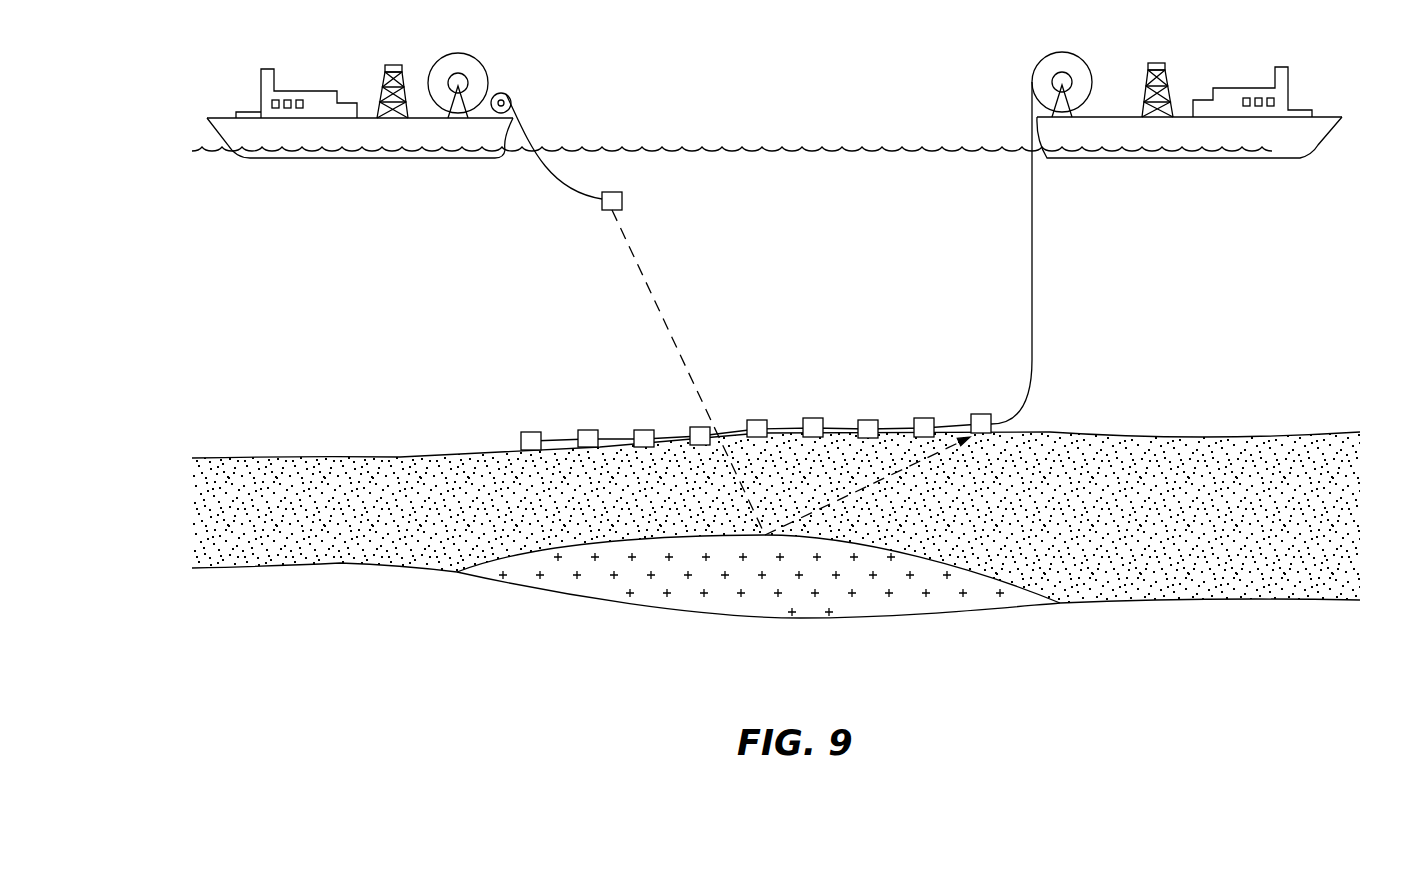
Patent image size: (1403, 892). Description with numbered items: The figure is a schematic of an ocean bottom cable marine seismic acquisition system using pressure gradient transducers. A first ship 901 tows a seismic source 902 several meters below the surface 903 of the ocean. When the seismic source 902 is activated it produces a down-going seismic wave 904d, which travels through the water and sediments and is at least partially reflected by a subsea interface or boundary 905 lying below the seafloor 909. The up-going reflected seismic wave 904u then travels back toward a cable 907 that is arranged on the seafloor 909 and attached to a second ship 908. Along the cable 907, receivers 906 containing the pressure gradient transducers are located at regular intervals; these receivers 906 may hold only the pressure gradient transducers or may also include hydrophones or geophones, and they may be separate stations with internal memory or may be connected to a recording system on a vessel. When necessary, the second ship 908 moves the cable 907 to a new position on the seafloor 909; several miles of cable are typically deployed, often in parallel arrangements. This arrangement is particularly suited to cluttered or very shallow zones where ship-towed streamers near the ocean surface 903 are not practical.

The first ship 901 is at (227, 117).
The seismic source 902 is at (603, 211).
The surface 903 is at (738, 148).
The down-going seismic wave 904d is at (658, 313).
The up-going reflected seismic wave 904u is at (900, 470).
The subsea interface or boundary 905 is at (688, 537).
The receivers 906 is at (982, 413).
The cable 907 is at (1035, 277).
The second ship 908 is at (1117, 117).
The seafloor 909 is at (358, 458).